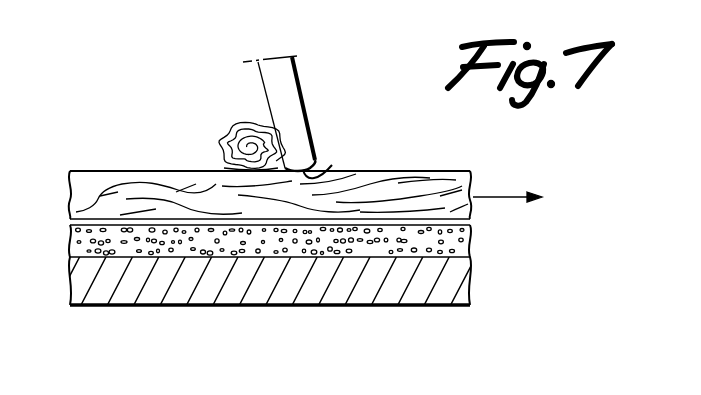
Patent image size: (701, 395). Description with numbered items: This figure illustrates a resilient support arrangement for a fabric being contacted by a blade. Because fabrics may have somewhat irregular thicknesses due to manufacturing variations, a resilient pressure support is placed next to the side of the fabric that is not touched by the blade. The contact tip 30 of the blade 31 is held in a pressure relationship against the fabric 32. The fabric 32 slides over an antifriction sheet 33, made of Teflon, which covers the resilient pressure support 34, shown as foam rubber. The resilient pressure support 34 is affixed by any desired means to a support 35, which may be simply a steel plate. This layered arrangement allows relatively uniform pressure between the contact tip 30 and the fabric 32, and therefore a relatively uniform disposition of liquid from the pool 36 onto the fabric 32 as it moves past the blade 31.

The contact tip 30 is at (318, 175).
The blade 31 is at (303, 78).
The fabric 32 is at (472, 185).
The antifriction sheet 33 is at (467, 212).
The resilient pressure support 34 is at (467, 248).
The support 35 is at (428, 293).
The pool 36 is at (249, 128).